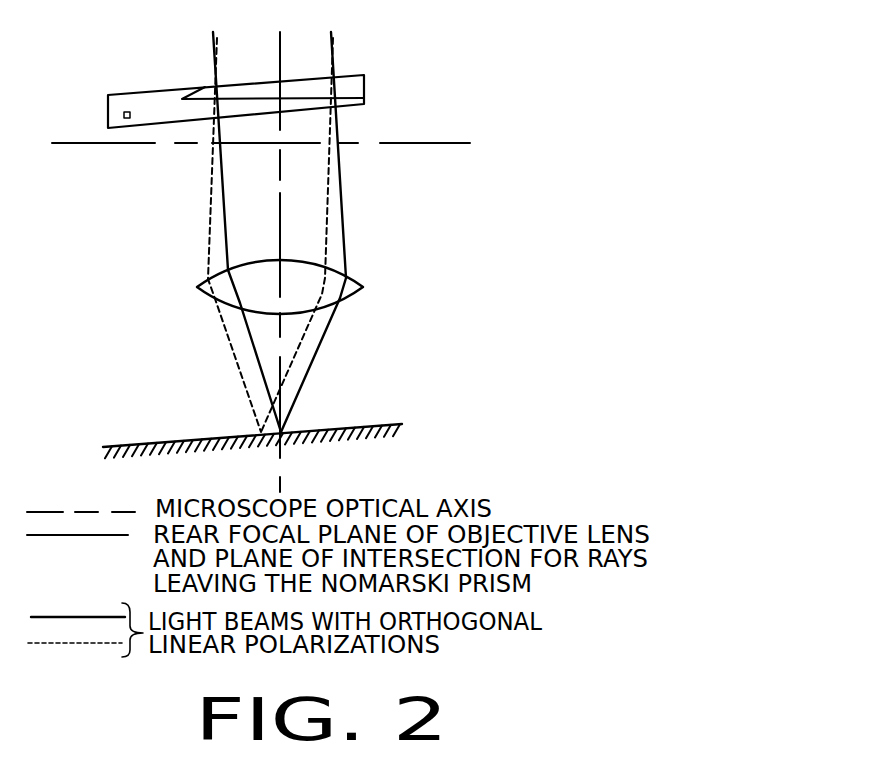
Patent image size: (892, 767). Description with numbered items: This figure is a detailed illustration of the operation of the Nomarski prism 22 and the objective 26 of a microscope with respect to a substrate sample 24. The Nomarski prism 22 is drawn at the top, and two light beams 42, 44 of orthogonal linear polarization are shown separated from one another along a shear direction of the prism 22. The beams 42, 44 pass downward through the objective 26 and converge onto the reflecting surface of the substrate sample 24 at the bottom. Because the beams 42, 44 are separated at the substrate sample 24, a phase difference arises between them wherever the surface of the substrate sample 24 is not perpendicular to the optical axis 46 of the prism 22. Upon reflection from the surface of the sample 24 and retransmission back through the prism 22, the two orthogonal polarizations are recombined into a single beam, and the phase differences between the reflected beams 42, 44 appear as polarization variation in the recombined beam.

The Nomarski prism 22 is at (348, 74).
The substrate sample 24 is at (355, 425).
The objective 26 is at (356, 296).
The light beam 42 is at (342, 217).
The light beam 44 is at (210, 256).
The optical axis 46 is at (438, 143).